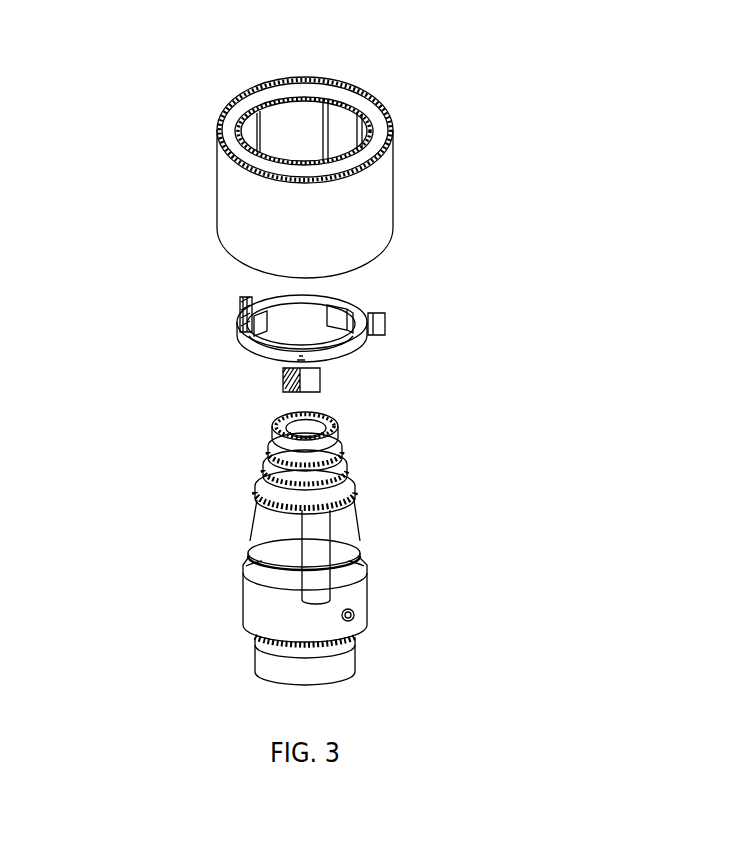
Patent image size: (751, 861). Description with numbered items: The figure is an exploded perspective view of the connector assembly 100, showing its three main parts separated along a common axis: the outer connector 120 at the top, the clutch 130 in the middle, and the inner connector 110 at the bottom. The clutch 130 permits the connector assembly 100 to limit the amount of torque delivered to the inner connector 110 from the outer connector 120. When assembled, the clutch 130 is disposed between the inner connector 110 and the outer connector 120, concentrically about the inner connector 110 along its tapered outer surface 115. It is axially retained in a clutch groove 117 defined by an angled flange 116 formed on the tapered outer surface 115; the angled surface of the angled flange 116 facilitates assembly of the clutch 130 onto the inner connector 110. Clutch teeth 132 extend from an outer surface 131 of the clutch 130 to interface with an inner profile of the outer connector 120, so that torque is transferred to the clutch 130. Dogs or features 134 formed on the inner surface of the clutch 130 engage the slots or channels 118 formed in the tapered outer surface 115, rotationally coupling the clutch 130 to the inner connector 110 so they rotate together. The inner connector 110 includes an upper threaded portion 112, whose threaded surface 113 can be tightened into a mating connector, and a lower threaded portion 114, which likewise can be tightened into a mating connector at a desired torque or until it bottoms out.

The connector assembly 100 is at (523, 128).
The inner connector 110 is at (360, 548).
The upper threaded portion 112 is at (343, 432).
The threaded surface 113 is at (347, 468).
The lower threaded portion 114 is at (337, 662).
The tapered outer surface 115 is at (357, 515).
The angled flange 116 is at (257, 560).
The clutch groove 117 is at (262, 588).
The slots or channels 118 is at (322, 592).
The outer connector 120 is at (363, 230).
The clutch 130 is at (372, 353).
The outer surface 131 is at (250, 350).
The clutch teeth 132 is at (380, 323).
The dogs or features 134 is at (363, 295).